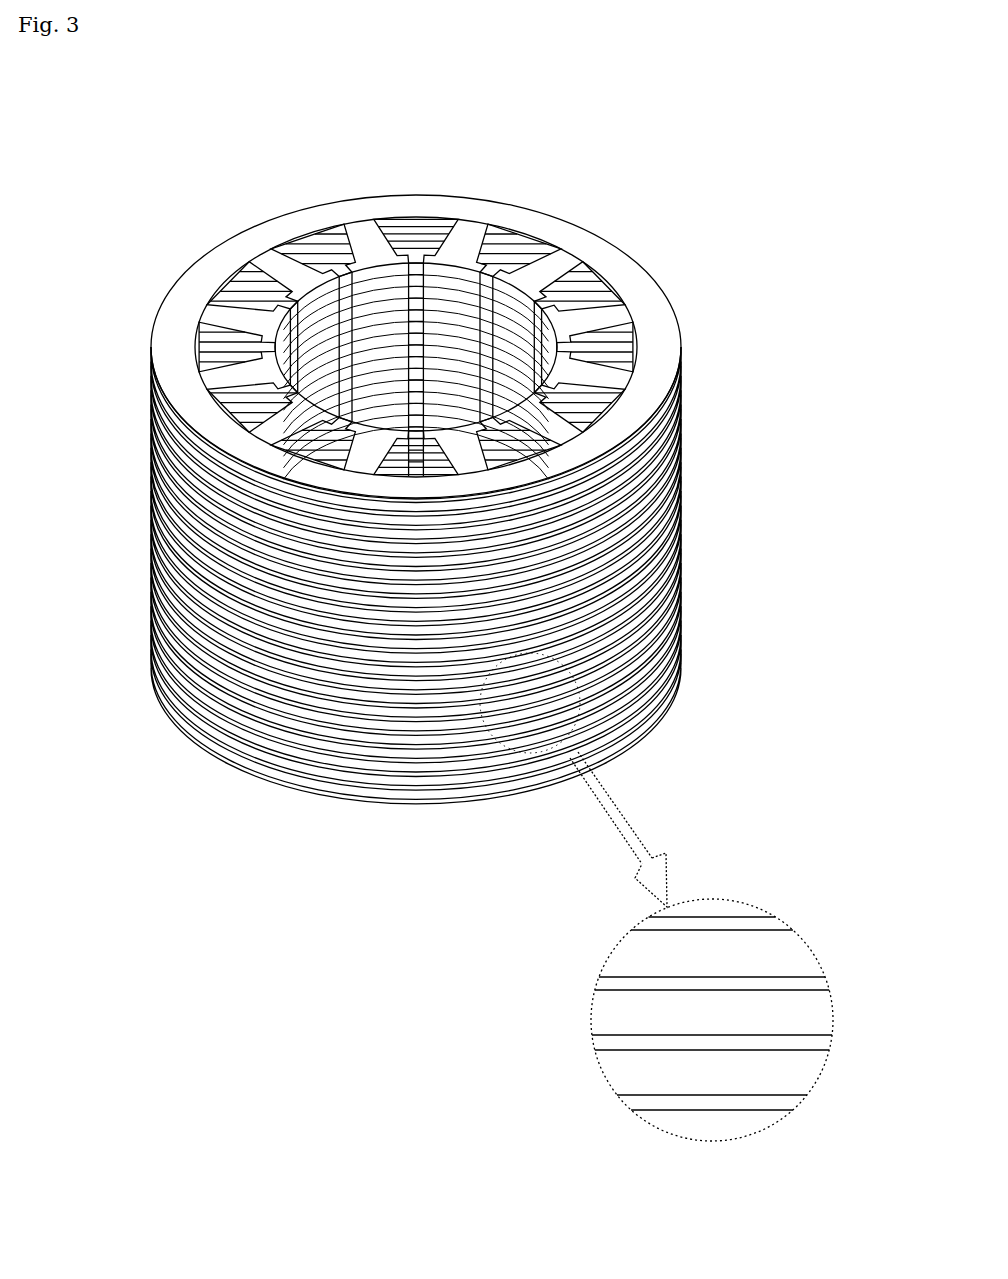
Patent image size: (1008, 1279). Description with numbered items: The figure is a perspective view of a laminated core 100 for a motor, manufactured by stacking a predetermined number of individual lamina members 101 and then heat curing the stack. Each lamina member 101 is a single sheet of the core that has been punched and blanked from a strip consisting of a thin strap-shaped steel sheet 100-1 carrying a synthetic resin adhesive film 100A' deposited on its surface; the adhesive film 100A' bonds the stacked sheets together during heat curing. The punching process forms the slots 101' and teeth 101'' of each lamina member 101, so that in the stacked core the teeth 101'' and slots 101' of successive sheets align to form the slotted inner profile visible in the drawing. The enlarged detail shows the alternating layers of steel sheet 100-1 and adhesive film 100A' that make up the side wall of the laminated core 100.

The laminated core 100 is at (648, 226).
The steel sheet 100-1 is at (628, 443).
The synthetic resin adhesive film 100A' is at (470, 717).
The lamina member 101 is at (416, 286).
The slot 101' is at (373, 332).
The tooth 101'' is at (380, 287).